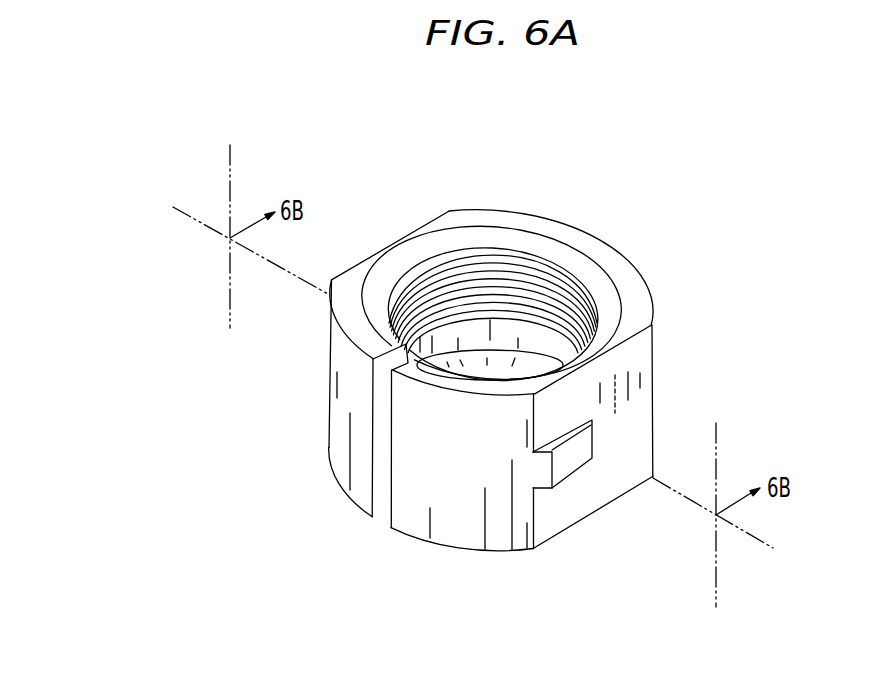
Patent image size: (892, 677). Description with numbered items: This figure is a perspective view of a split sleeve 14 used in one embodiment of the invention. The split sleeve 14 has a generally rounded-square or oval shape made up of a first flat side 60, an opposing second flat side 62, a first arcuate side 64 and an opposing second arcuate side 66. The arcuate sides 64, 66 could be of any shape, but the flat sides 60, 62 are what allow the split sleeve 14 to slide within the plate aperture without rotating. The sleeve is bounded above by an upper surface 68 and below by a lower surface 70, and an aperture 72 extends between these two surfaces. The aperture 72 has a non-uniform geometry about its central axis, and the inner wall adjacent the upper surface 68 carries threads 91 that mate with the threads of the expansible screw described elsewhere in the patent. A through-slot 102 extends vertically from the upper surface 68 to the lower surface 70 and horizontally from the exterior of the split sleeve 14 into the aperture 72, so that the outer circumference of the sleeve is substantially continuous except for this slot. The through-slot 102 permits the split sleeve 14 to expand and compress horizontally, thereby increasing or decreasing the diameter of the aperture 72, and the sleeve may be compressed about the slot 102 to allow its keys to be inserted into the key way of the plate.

The split sleeve 14 is at (100, 246).
The first flat side 60 is at (387, 250).
The second flat side 62 is at (624, 422).
The first arcuate side 64 is at (436, 483).
The second arcuate side 66 is at (642, 275).
The upper surface 68 is at (458, 223).
The lower surface 70 is at (568, 532).
The aperture 72 is at (492, 337).
The threads 91 is at (567, 268).
The through-slot 102 is at (372, 456).